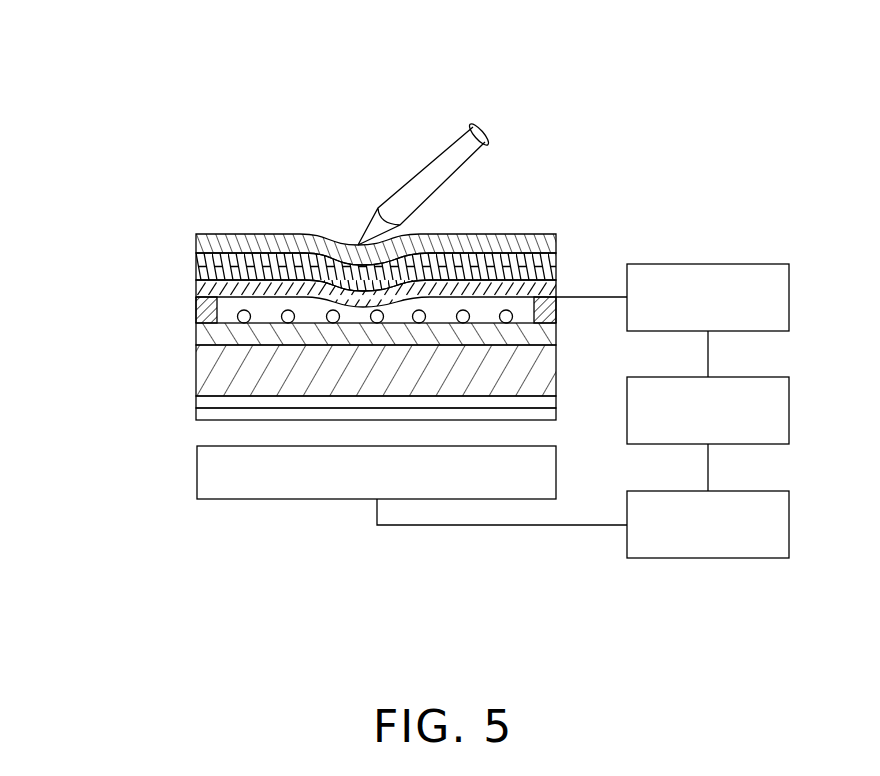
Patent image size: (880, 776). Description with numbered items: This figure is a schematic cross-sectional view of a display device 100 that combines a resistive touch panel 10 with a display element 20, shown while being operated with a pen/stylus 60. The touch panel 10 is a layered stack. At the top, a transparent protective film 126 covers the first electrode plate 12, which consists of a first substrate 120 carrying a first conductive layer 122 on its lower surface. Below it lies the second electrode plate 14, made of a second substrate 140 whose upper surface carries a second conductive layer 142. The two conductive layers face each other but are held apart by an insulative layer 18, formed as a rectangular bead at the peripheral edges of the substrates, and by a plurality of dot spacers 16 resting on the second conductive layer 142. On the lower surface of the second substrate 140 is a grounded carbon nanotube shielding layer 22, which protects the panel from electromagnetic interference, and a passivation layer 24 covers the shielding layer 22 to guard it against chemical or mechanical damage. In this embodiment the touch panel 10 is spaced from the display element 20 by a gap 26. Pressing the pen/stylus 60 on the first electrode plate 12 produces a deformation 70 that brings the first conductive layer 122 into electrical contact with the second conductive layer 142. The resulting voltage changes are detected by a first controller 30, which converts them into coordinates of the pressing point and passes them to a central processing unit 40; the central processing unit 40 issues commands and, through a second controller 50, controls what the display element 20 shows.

The display device 100 is at (473, 48).
The touch panel 10 is at (77, 205).
The first electrode plate 12 is at (116, 243).
The transparent protective film 126 is at (198, 236).
The first substrate 120 is at (198, 255).
The first conductive layer 122 is at (198, 291).
The second electrode plate 14 is at (116, 325).
The second conductive layer 142 is at (198, 331).
The second substrate 140 is at (198, 370).
The dot spacers 16 is at (507, 310).
The insulative layer 18 is at (556, 310).
The shielding layer 22 is at (198, 401).
The passivation layer 24 is at (198, 413).
The gap 26 is at (210, 431).
The display element 20 is at (210, 483).
The first controller 30 is at (782, 305).
The central processing unit 40 is at (782, 405).
The second controller 50 is at (782, 505).
The pen/stylus 60 is at (448, 158).
The deformation 70 is at (358, 245).